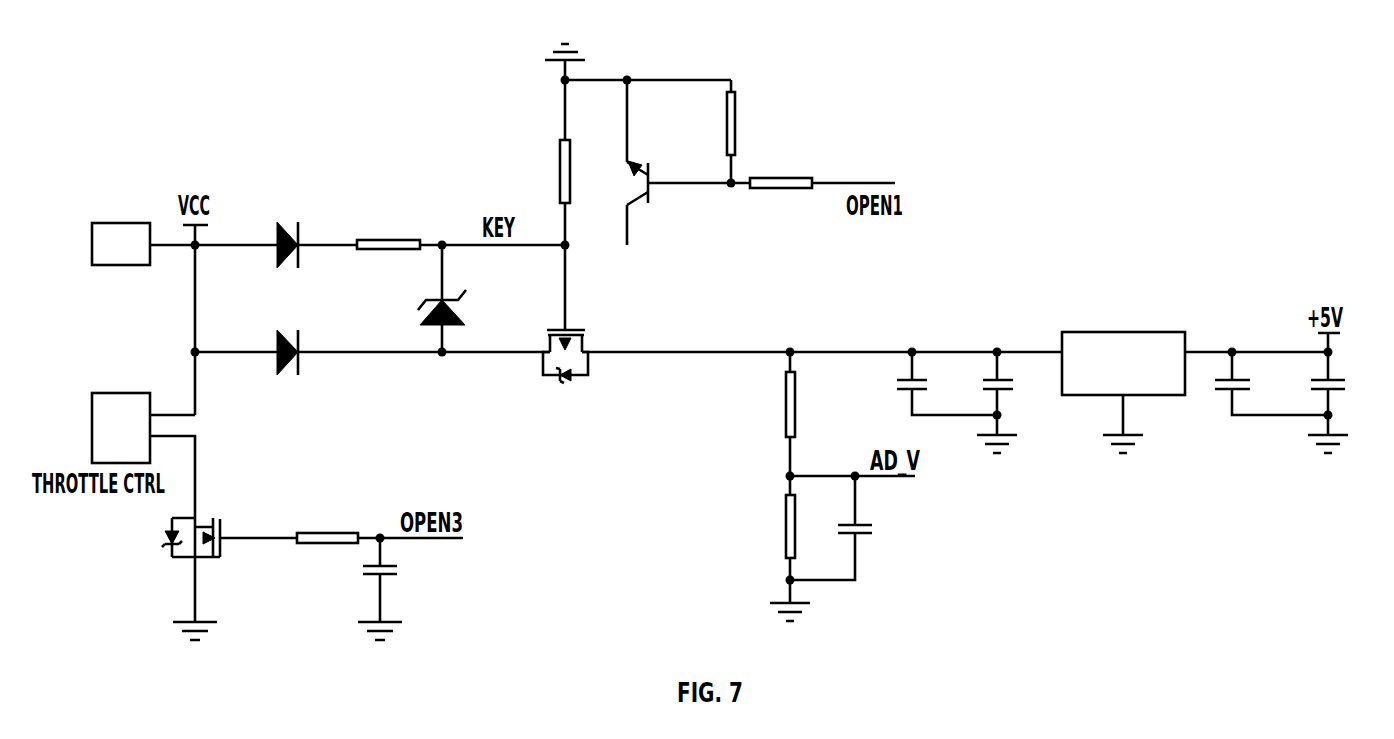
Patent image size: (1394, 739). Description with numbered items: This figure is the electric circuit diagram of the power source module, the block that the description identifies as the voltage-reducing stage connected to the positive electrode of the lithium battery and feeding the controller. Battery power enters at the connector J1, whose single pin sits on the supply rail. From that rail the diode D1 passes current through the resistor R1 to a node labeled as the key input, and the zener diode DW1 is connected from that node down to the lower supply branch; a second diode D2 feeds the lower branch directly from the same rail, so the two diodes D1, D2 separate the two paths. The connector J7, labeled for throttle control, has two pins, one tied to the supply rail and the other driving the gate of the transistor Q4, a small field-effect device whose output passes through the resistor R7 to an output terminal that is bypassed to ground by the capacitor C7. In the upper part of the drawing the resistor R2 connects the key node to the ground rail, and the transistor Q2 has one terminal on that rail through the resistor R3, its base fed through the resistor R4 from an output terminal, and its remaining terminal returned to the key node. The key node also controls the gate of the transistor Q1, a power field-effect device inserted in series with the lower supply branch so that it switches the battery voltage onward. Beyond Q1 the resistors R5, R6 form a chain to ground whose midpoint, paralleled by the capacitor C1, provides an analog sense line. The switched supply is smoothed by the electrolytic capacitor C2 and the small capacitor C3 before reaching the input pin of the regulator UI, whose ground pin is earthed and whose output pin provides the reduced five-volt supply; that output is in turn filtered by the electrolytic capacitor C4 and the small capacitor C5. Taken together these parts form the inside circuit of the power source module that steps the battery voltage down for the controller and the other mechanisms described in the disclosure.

The VCC connector J1 is at (119, 244).
The throttle control connector J7 is at (120, 410).
The diode D1 LL4148 D1 is at (294, 245).
The diode D2 LL4148 D2 is at (294, 355).
The resistor R1 10K R1 is at (388, 244).
The zener diode DW1 is at (462, 292).
The MOSFET Q1 VS4435A8 Q1 is at (615, 349).
The resistor R2 1M R2 is at (580, 171).
The transistor Q2 88050 Q2 is at (664, 190).
The resistor R3 10K R3 is at (753, 121).
The resistor R4 10K R4 is at (781, 185).
The resistor R5 100K R5 is at (818, 401).
The resistor R6 75K R6 is at (812, 524).
The capacitor C1 104 C1 is at (868, 534).
The electrolytic capacitor C2 10uF C2 is at (936, 383).
The capacitor C3 104 C3 is at (1014, 390).
The voltage regulator UI HT7150-1 UI is at (1118, 348).
The electrolytic capacitor C4 10uF C4 is at (1260, 382).
The capacitor C5 103 C5 is at (1343, 387).
The MOSFET Q4 RLR8726 Q4 is at (221, 539).
The resistor R7 100R R7 is at (327, 539).
The capacitor C7 104 C7 is at (399, 578).